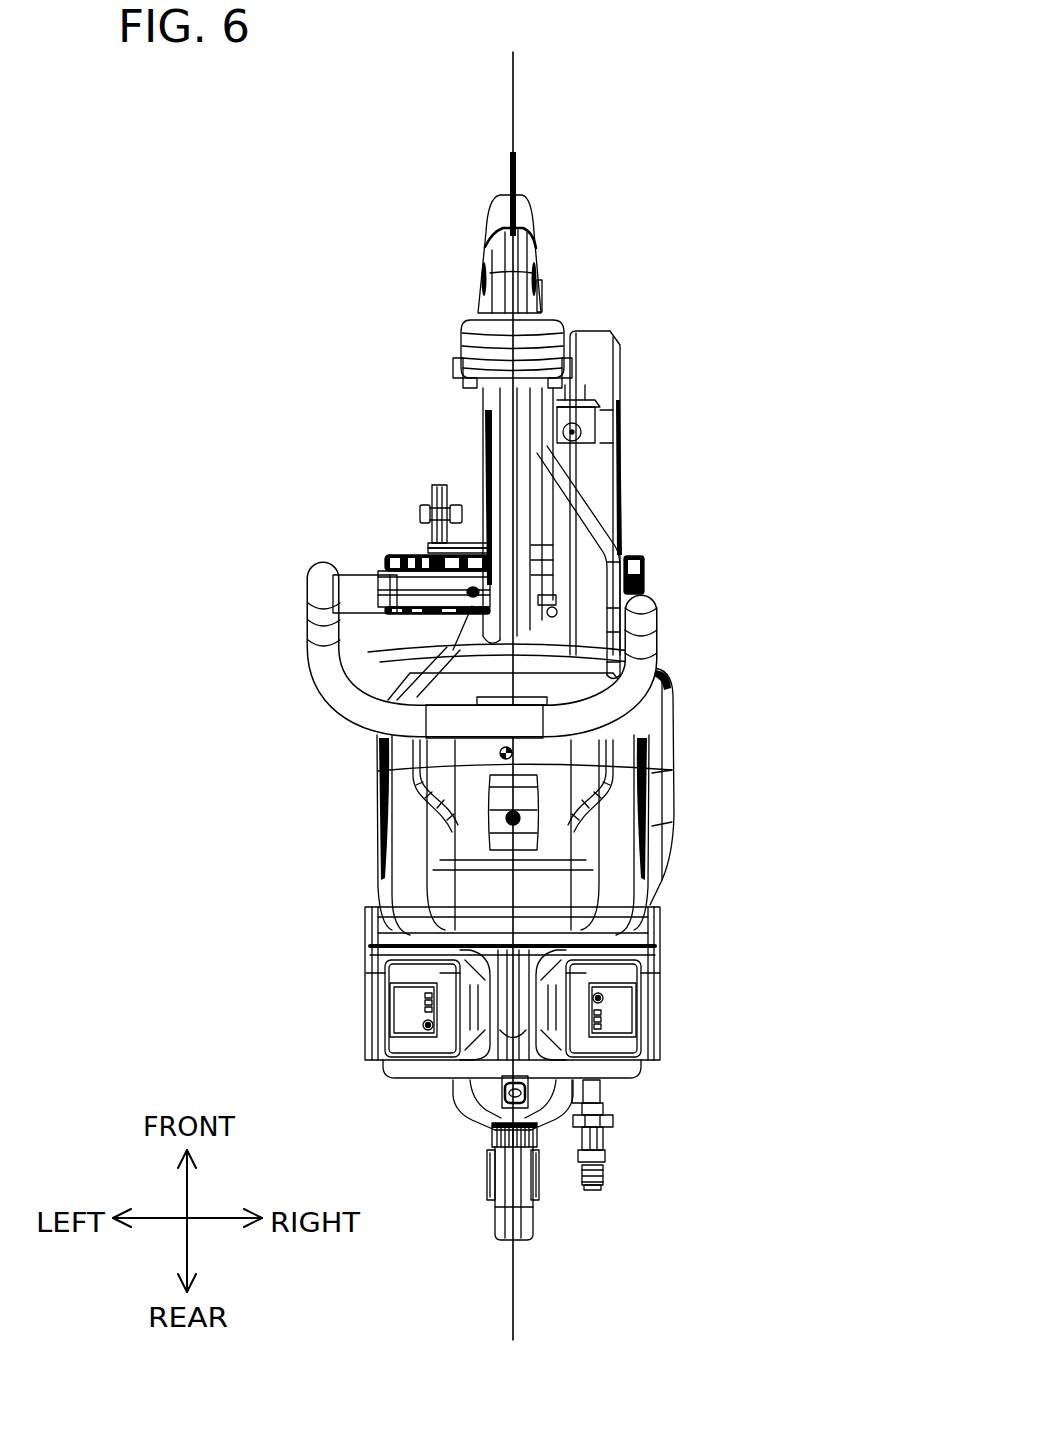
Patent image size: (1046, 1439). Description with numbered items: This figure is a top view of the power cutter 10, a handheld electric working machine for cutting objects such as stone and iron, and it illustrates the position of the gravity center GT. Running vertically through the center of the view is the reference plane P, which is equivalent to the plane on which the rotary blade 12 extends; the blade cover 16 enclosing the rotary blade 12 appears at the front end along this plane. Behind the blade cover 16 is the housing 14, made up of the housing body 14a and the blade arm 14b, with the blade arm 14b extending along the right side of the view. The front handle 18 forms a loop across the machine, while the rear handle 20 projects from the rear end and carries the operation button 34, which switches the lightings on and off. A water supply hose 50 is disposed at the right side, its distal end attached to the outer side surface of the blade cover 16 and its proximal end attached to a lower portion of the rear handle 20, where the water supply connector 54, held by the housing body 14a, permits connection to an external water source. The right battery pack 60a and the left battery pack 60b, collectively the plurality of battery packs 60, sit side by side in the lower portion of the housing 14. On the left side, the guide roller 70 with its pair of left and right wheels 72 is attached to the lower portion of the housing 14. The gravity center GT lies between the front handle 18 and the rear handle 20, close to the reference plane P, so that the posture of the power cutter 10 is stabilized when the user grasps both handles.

The power cutter 10 is at (766, 248).
The rotary blade 12 is at (518, 175).
The housing 14 is at (724, 618).
The housing body 14a is at (740, 777).
The blade arm 14b is at (625, 493).
The blade cover 16 is at (533, 222).
The front handle 18 is at (327, 560).
The rear handle 20 is at (497, 1238).
The operation button 34 is at (500, 1106).
The water supply hose 50 is at (580, 500).
The water supply connector 54 is at (596, 1190).
The plurality of battery packs 60 is at (518, 1005).
The right battery pack 60a is at (660, 1018).
The left battery pack 60b is at (383, 1018).
The guide roller 70 is at (393, 556).
The wheels 72 is at (437, 485).
The reference plane P is at (517, 114).
The gravity center GT is at (503, 757).